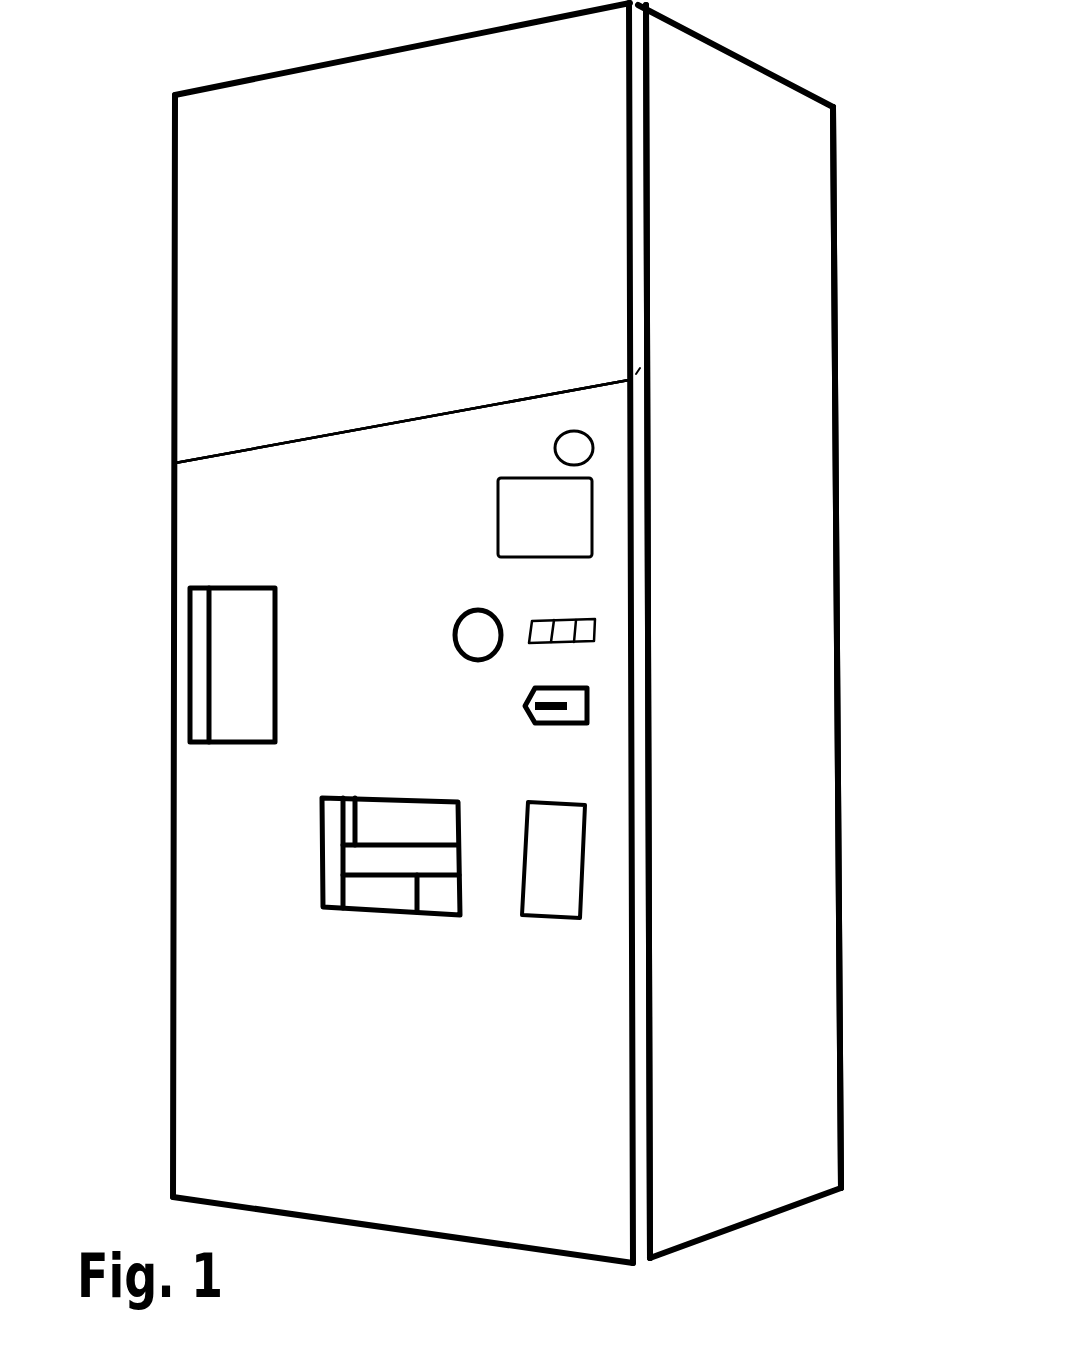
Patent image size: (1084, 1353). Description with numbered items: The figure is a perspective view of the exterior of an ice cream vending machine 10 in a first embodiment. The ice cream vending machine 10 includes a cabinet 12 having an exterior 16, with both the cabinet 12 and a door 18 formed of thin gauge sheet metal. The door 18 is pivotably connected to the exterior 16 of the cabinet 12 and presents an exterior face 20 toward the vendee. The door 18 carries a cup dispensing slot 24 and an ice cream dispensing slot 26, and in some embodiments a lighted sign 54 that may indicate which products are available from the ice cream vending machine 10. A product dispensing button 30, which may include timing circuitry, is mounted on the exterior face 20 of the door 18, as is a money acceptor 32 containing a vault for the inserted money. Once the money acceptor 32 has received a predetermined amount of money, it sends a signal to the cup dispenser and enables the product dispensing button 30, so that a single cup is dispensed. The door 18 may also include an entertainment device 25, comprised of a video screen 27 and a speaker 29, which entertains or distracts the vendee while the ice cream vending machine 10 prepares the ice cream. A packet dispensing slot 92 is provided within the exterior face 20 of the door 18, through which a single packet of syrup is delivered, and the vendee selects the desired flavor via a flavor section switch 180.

The ice cream vending machine 10 is at (805, 52).
The cabinet 12 is at (837, 243).
The exterior 16 is at (724, 339).
The door 18 is at (405, 484).
The exterior face 20 is at (212, 505).
The cup dispensing slot 24 is at (207, 623).
The entertainment device 25 is at (592, 535).
The ice cream dispensing slot 26 is at (313, 832).
The video screen 27 is at (608, 482).
The speaker 29 is at (593, 440).
The product dispensing button 30 is at (500, 620).
The money acceptor 32 is at (595, 693).
The lighted sign 54 is at (412, 226).
The packet dispensing slot 92 is at (583, 872).
The flavor section switch 180 is at (600, 623).